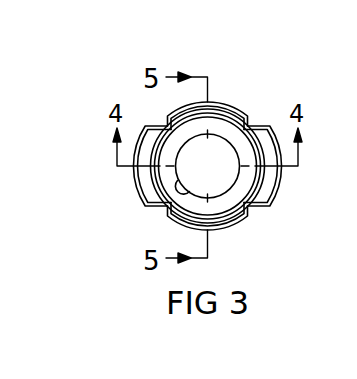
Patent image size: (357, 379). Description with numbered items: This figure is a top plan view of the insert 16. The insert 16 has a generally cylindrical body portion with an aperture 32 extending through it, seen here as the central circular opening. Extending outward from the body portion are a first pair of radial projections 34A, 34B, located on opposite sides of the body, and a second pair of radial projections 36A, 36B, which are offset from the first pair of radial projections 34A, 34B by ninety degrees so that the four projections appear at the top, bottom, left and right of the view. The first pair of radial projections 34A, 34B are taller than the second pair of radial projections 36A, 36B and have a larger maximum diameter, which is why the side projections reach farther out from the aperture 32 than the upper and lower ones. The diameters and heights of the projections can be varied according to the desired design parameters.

The insert 16 is at (200, 148).
The aperture 32 is at (181, 187).
The first pair of radial projections 34A is at (136, 184).
The first pair of radial projections 34B is at (276, 195).
The second pair of radial projections 36A is at (226, 232).
The second pair of radial projections 36B is at (223, 101).